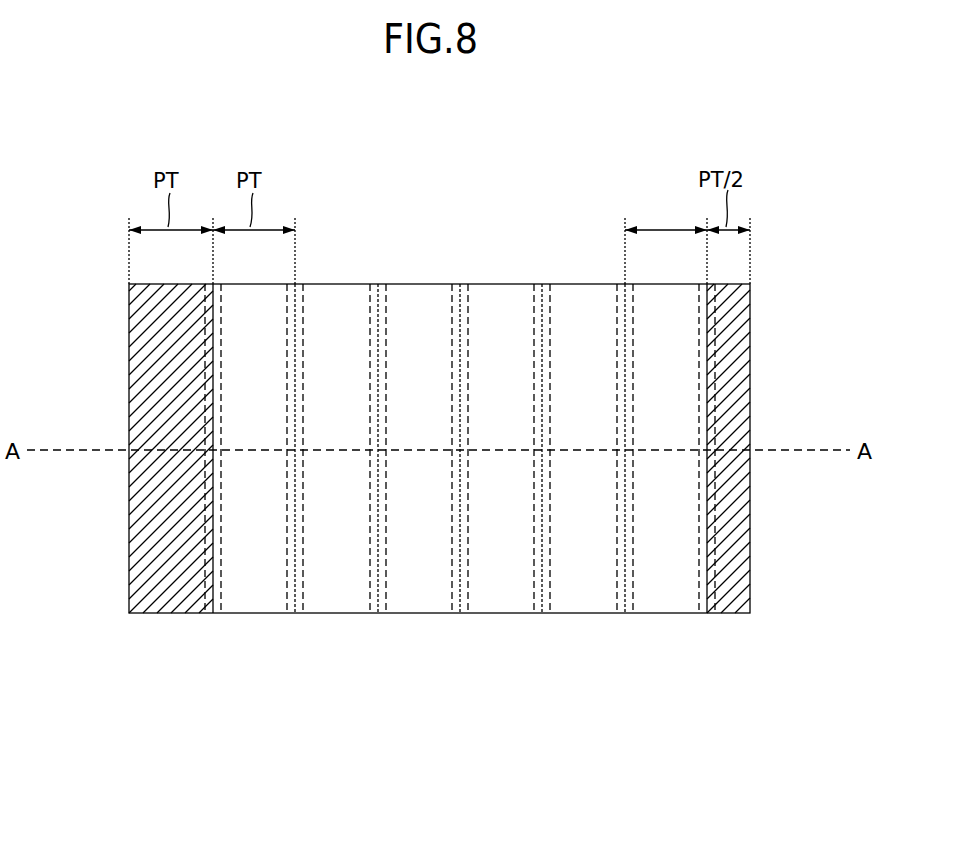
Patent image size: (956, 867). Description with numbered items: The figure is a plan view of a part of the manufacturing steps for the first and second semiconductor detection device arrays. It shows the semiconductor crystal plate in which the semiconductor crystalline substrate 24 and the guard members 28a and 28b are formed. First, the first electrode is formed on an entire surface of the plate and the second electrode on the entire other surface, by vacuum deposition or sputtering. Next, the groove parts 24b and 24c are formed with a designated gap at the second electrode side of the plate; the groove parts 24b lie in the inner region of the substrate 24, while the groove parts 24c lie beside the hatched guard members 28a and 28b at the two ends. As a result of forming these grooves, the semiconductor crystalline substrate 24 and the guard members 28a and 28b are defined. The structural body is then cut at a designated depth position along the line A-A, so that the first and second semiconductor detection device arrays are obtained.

The semiconductor crystalline substrate 24 is at (419, 613).
The groove parts 24b is at (375, 284).
The groove parts 24c is at (217, 613).
The guard member 28a is at (173, 613).
The guard member 28b is at (728, 613).